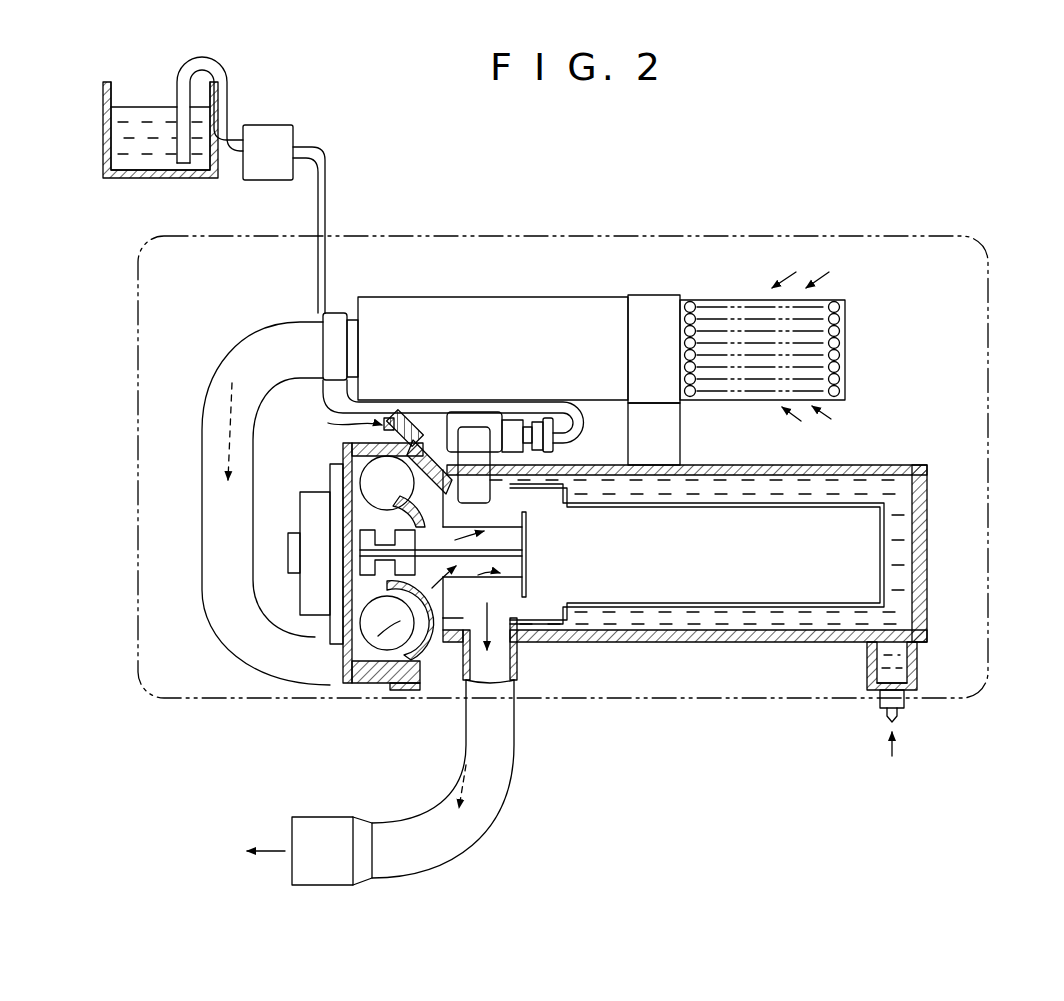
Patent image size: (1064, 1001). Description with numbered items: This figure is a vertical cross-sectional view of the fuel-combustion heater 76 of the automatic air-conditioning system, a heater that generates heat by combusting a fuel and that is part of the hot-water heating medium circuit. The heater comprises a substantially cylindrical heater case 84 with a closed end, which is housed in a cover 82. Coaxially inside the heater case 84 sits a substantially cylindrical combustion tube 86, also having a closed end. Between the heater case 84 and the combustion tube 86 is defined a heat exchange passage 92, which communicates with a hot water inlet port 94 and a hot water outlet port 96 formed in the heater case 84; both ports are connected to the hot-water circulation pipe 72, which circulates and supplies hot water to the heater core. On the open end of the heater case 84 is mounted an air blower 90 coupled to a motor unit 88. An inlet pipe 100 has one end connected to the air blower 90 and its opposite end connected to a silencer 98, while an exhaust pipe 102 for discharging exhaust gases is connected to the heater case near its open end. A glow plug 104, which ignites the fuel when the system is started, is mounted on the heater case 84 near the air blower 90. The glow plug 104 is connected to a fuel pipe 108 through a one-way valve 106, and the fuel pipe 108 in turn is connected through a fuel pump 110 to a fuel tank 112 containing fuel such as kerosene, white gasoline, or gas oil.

The fuel-combustion heater 76 is at (760, 226).
The cover 82 is at (990, 330).
The fuel tank 112 is at (103, 131).
The fuel pump 110 is at (292, 126).
The silencer 98 is at (717, 300).
The glow plug 104 is at (481, 412).
The fuel pipe 108 is at (437, 408).
The one-way valve 106 is at (511, 427).
The hot water outlet port 96 is at (417, 413).
The hot-water circulation pipe 72 is at (394, 418).
The motor unit 88 is at (306, 516).
The air blower 90 is at (345, 662).
The inlet pipe 100 is at (233, 613).
The exhaust pipe 102 is at (450, 845).
The heater case 84 is at (735, 644).
The combustion tube 86 is at (735, 503).
The heat exchange passage 92 is at (664, 622).
The hot water inlet port 94 is at (908, 690).